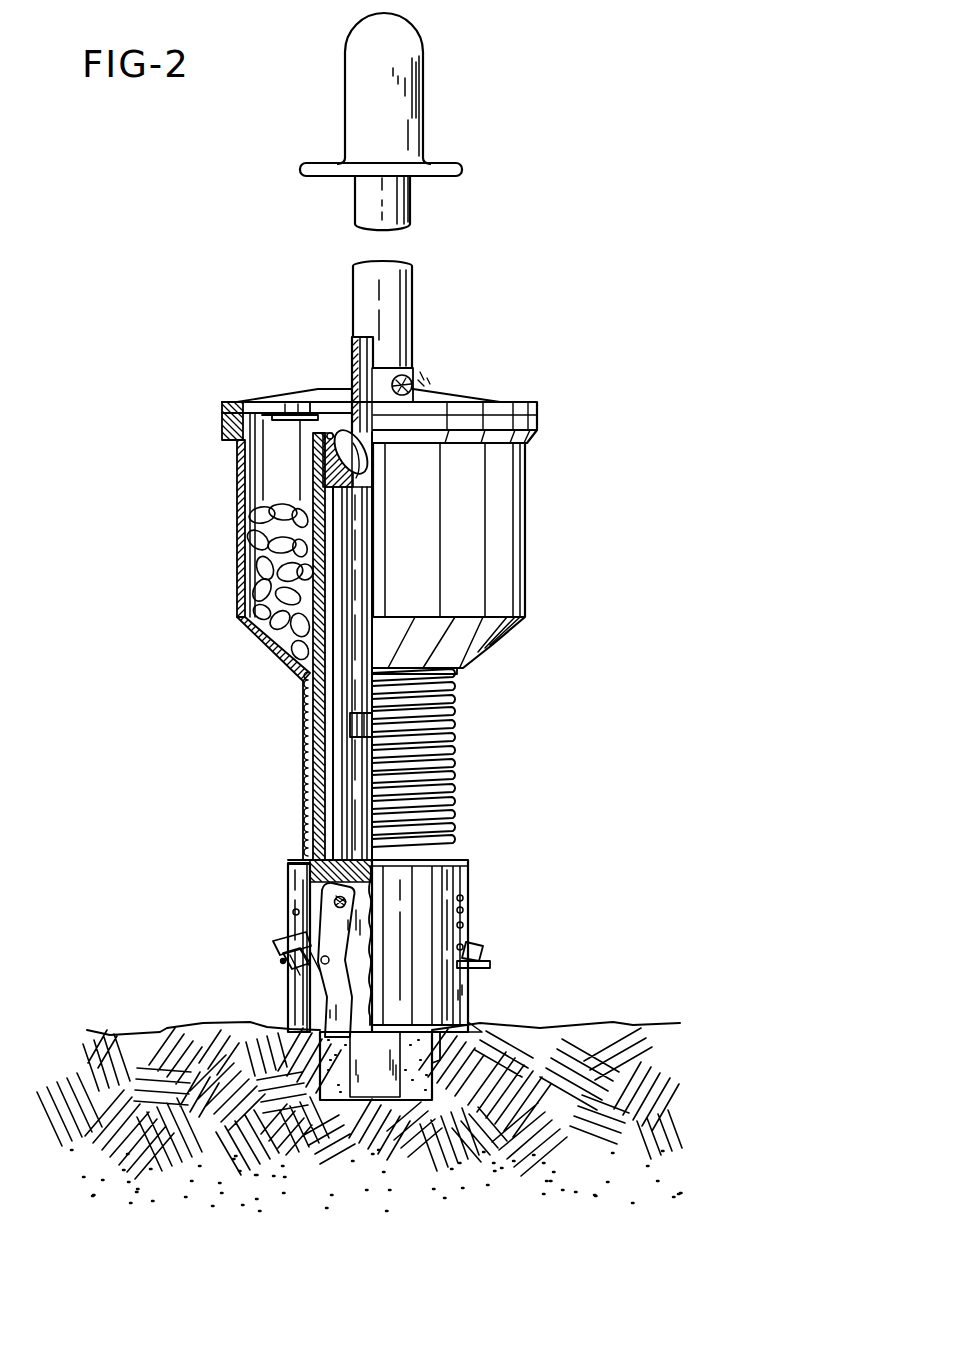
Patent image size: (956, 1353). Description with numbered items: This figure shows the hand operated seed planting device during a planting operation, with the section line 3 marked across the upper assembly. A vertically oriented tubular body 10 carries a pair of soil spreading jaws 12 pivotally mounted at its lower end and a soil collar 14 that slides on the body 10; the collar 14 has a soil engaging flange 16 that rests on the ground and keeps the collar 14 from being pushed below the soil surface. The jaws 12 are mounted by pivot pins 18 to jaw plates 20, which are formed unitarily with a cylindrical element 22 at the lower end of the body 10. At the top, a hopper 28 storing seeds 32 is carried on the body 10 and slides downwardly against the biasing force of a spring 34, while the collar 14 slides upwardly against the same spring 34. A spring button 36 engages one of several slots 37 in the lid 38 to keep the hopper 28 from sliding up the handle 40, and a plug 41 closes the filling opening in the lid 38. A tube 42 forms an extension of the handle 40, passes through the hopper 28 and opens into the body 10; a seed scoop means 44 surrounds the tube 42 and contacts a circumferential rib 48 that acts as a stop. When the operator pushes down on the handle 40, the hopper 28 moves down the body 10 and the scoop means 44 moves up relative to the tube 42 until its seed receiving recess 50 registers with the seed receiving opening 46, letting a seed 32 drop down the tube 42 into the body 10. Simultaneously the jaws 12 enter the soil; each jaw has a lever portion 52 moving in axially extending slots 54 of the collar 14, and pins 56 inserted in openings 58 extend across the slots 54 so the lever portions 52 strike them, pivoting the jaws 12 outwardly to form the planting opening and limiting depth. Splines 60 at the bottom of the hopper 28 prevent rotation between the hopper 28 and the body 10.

The tubular body 10 is at (302, 803).
The soil spreading jaws 12 is at (328, 941).
The soil collar 14 is at (430, 888).
The soil engaging flange 16 is at (478, 1021).
The pivot pins 18 is at (330, 907).
The jaw plates 20 is at (362, 912).
The cylindrical element 22 is at (312, 856).
The hopper 28 is at (505, 577).
The seeds 32 is at (352, 436).
The spring 34 is at (442, 717).
The spring button 36 is at (392, 136).
The slots 37 is at (410, 376).
The lid 38 is at (262, 403).
The handle 40 is at (393, 295).
The plug 41 is at (300, 400).
The tube 42 is at (350, 525).
The seed scoop means 44 is at (357, 491).
The seed receiving opening 46 is at (335, 443).
The circumferential rib 48 is at (352, 716).
The seed receiving recess 50 is at (347, 437).
The lever portion 52 is at (282, 951).
The axially extending slots 54 is at (288, 912).
The pins 56 is at (470, 964).
The openings 58 is at (464, 947).
The notch engaging splines 60 is at (390, 1082).
The section line 3- 3 is at (612, 455).